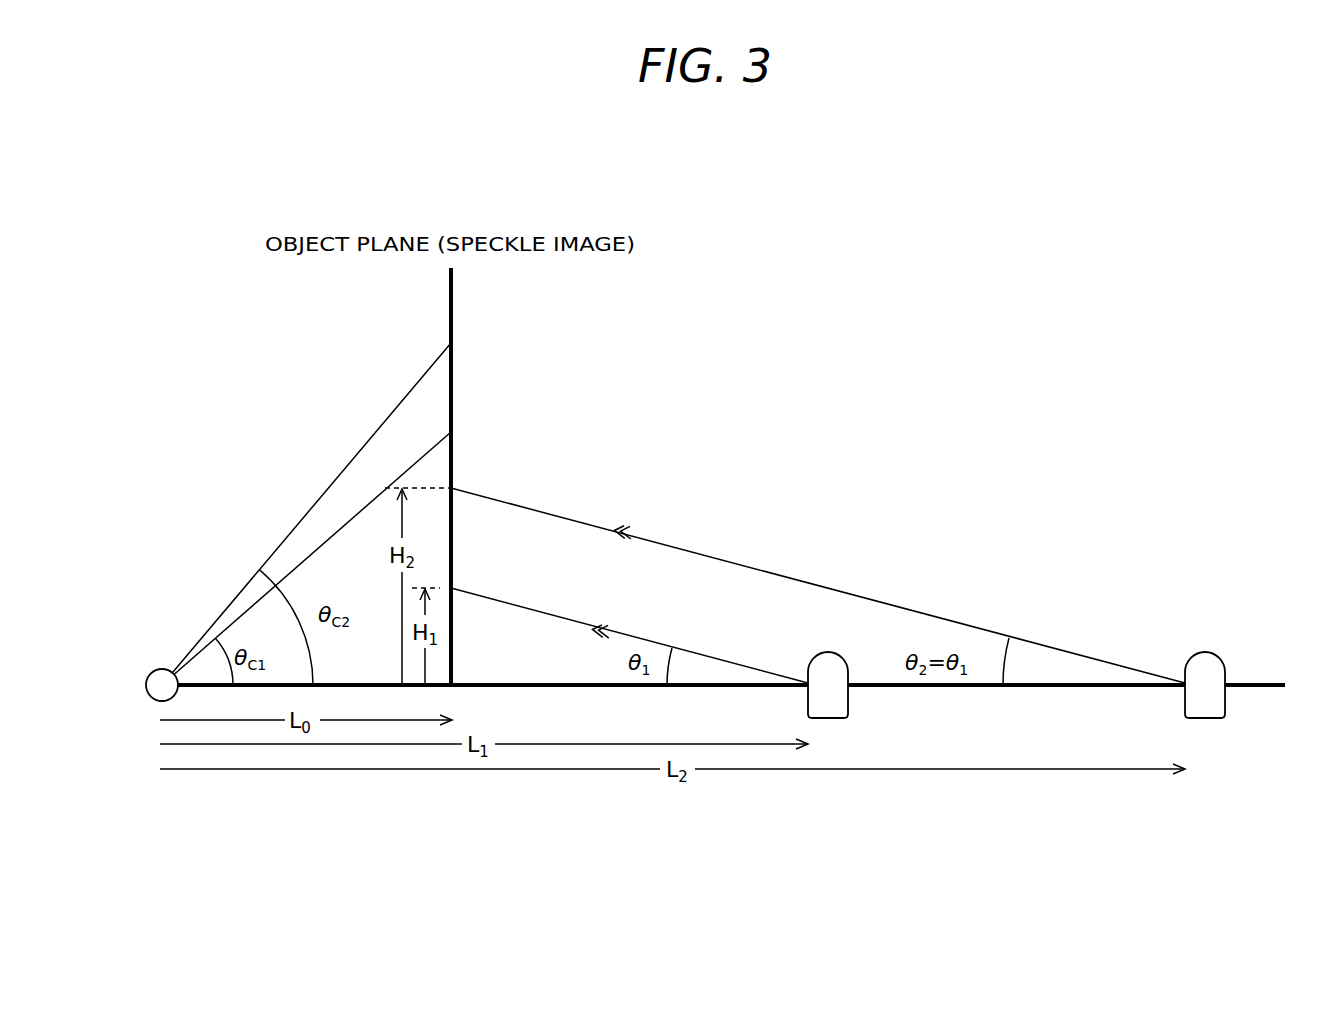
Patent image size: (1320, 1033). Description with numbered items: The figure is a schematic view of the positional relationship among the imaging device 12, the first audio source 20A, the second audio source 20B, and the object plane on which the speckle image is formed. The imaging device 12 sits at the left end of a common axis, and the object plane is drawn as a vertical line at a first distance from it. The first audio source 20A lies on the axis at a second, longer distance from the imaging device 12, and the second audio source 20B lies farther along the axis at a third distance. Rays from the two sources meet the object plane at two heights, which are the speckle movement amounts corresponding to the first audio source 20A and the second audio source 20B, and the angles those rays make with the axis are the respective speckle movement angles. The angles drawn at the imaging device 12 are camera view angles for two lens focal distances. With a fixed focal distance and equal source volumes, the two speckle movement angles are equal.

The imaging device 12 is at (141, 685).
The first audio source 20A is at (846, 698).
The second audio source 20B is at (1223, 698).